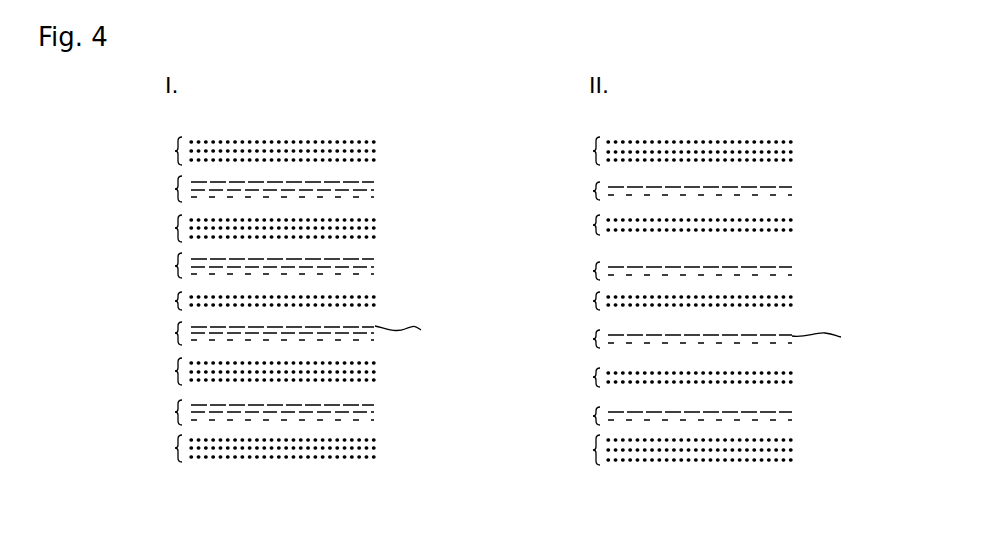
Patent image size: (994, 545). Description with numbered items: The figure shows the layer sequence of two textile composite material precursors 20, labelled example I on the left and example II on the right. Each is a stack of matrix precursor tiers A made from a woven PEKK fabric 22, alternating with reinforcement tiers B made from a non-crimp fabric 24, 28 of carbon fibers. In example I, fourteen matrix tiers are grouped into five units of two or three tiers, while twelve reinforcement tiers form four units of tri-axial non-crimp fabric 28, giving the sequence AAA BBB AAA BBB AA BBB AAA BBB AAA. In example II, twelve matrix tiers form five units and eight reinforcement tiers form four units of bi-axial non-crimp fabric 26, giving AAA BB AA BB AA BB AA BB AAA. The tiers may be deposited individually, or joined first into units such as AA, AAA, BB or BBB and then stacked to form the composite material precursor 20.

The textile composite material precursor 20 is at (304, 112).
The woven PEKK fabric 22 is at (375, 142).
The non-crimp fabric from carbon fibers 24 is at (532, 230).
The bi-axial non-crimp fabric 26 is at (800, 182).
The tri-axial non-crimp fabric 28 is at (382, 178).